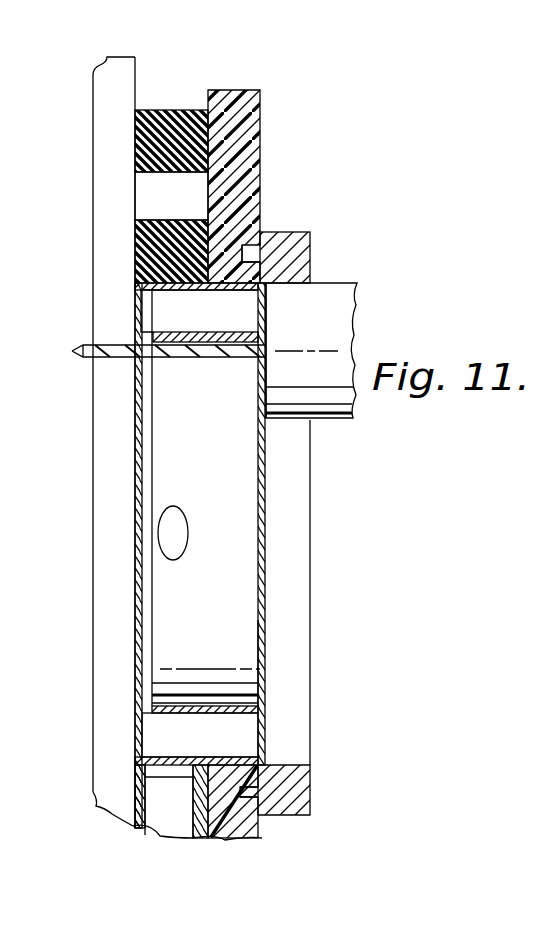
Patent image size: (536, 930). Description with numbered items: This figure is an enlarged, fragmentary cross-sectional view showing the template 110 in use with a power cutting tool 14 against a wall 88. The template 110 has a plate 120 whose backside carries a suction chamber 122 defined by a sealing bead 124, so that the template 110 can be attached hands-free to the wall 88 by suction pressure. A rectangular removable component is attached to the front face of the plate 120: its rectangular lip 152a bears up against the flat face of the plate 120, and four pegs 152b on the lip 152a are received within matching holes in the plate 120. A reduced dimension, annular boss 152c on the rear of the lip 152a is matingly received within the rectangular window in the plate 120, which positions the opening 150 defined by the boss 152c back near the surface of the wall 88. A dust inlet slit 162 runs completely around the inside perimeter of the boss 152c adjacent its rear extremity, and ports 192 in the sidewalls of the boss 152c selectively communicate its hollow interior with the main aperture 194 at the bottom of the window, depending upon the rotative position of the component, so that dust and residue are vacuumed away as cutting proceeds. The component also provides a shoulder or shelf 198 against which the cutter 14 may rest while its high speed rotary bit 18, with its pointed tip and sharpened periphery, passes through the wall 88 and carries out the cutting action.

The cutting tool 14 is at (383, 318).
The rotary bit 18 is at (237, 352).
The wall 88 is at (103, 112).
The template 110 is at (273, 78).
The plate 120 is at (233, 131).
The suction chamber 122 is at (150, 198).
The sealing bead 124 is at (172, 110).
The opening 150 is at (138, 700).
The rectangular lip 152a is at (303, 248).
The pegs 152b is at (252, 250).
The annular boss 152c is at (232, 690).
The dust inlet slit 162 is at (152, 708).
The ports 192 is at (167, 757).
The aperture 194 is at (170, 778).
The shoulder or shelf 198 is at (268, 304).